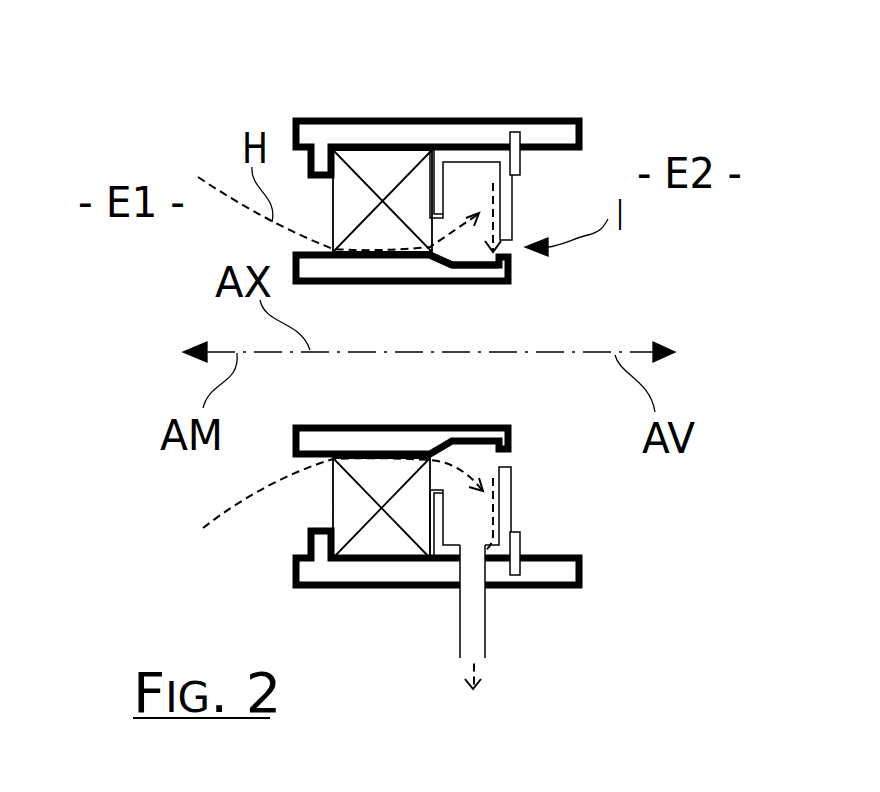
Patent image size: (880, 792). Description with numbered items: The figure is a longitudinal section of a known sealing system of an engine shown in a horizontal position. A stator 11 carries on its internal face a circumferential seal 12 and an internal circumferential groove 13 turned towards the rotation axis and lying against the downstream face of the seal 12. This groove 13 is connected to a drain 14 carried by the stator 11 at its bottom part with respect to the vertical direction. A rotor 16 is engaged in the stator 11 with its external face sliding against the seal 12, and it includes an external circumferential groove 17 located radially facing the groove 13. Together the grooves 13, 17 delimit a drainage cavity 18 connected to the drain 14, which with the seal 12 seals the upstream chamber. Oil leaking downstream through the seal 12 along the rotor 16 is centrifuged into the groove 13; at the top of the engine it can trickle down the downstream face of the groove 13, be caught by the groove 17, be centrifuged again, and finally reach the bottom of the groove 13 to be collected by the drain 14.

The stator 11 is at (323, 134).
The circumferential seal 12 is at (388, 178).
The internal circumferential groove 13 is at (478, 150).
The drain 14 is at (460, 628).
The rotor 16 is at (388, 268).
The external circumferential groove 17 is at (478, 272).
The drainage cavity 18 is at (462, 185).